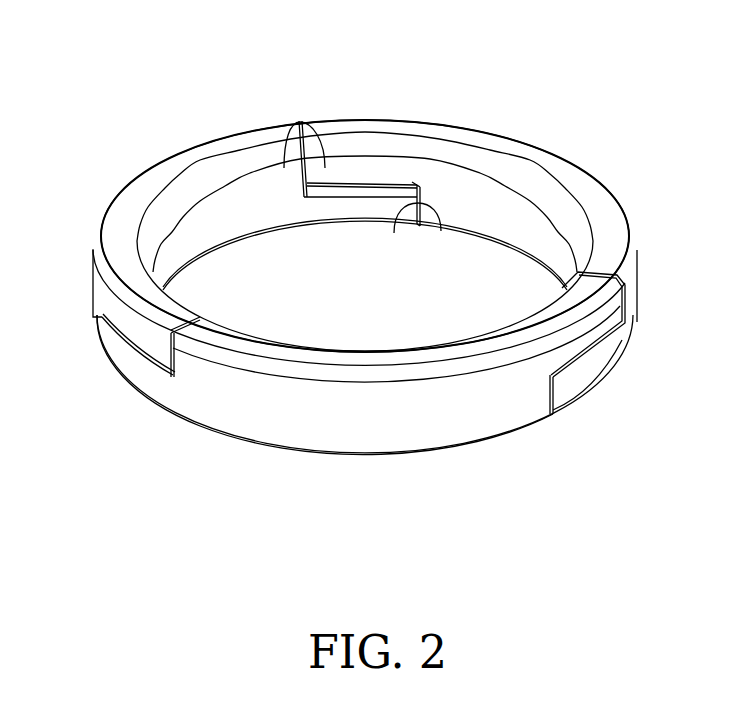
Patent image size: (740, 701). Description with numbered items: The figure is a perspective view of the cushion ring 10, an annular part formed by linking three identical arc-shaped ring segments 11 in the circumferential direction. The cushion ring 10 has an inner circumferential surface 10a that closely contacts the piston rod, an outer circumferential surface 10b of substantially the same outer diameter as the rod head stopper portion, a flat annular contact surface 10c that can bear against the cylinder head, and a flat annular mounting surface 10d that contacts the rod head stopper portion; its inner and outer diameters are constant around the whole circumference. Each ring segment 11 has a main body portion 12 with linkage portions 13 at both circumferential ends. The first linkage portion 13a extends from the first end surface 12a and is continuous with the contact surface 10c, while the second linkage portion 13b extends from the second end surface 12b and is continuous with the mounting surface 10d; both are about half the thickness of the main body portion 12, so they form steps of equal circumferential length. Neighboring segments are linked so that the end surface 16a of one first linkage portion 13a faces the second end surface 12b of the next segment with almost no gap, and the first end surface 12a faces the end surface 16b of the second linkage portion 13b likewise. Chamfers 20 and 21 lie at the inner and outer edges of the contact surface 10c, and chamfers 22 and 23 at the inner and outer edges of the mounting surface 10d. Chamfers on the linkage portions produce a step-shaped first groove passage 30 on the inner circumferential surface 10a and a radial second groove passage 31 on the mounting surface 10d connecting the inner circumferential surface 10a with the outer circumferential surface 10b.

The cushion ring 10 is at (356, 281).
The inner circumferential surface 10a is at (365, 241).
The outer circumferential surface 10b is at (287, 435).
The contact surface 10c is at (513, 333).
The mounting surface 10d is at (226, 432).
The ring segment 11 is at (347, 291).
The main body portion 12 is at (359, 301).
The first end surface 12a is at (402, 205).
The second end surface 12b is at (308, 135).
The linkage portion 13 is at (356, 261).
The first linkage portion 13a is at (346, 170).
The second linkage portion 13b is at (343, 218).
The end surface of the first linkage portion 16a is at (296, 152).
The end surface of the second linkage portion 16b is at (428, 212).
The chamfer 20 is at (175, 195).
The chamfer 21 is at (97, 238).
The chamfer 22 is at (310, 228).
The chamfer 23 is at (396, 448).
The first groove passage 30 is at (388, 170).
The second groove passage 31 is at (421, 230).